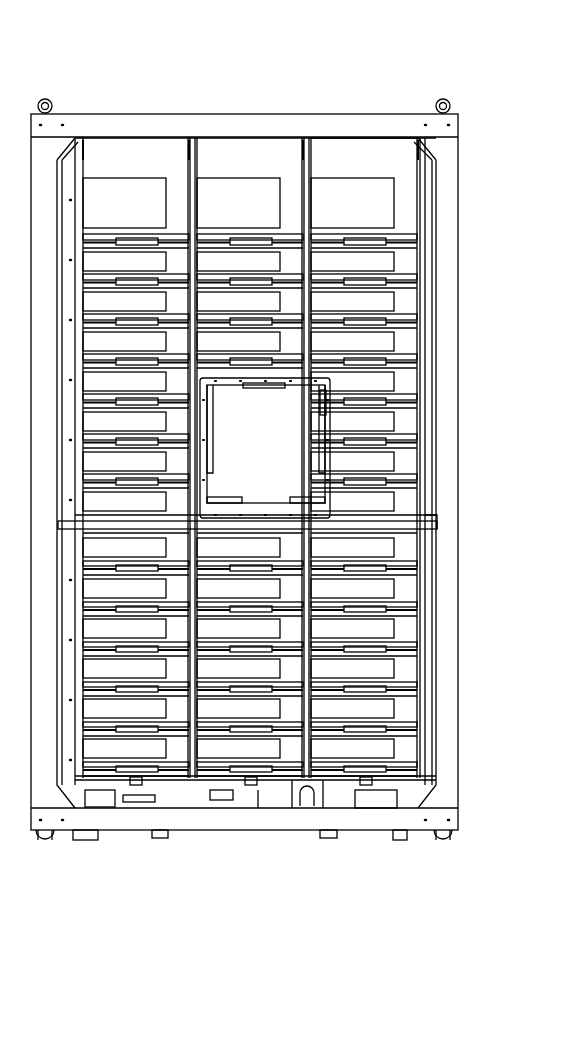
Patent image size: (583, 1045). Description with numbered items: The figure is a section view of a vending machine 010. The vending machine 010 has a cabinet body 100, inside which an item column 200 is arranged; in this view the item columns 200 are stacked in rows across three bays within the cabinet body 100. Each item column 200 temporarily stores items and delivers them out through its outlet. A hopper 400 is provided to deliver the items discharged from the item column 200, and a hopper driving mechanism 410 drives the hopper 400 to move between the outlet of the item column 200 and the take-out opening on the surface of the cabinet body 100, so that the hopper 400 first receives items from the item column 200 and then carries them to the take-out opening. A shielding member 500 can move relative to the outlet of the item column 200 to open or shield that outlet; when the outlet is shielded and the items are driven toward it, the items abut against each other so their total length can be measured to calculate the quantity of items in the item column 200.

The vending machine 010 is at (285, 63).
The cabinet body 100 is at (452, 144).
The item column 200 is at (422, 196).
The hopper 400 is at (316, 511).
The hopper driving mechanism 410 is at (463, 507).
The shielding member 500 is at (305, 431).